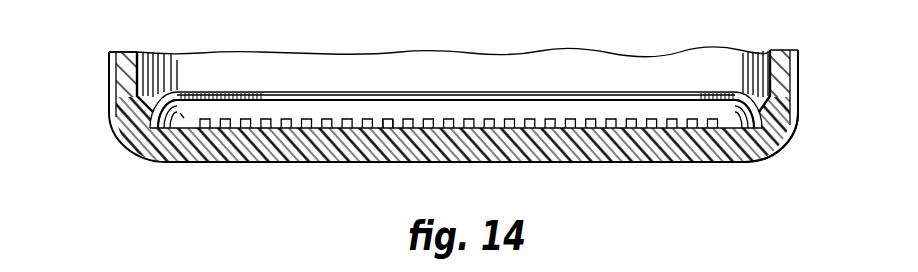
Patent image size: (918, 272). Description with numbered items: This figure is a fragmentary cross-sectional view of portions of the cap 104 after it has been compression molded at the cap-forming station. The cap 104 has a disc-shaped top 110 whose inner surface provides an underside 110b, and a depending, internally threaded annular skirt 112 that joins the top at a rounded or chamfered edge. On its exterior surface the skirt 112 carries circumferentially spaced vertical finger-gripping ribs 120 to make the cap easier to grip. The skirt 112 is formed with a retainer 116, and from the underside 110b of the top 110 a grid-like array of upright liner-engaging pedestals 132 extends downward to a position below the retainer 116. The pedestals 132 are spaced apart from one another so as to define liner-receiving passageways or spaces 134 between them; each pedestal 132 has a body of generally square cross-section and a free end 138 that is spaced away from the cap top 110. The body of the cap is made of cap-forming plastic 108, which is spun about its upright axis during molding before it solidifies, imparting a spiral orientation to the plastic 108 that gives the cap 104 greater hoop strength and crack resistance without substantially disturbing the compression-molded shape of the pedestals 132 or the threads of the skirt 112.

The cap 104 is at (791, 128).
The cap-forming plastic 108 is at (160, 142).
The top 110 is at (217, 163).
The underside 110b is at (738, 128).
The skirt 112 is at (800, 93).
The retainer 116 is at (750, 92).
The finger-gripping ribs 120 is at (110, 77).
The liner-engaging pedestals 132 is at (558, 118).
The liner-receiving passageways 134 is at (596, 128).
The free end 138 is at (393, 118).